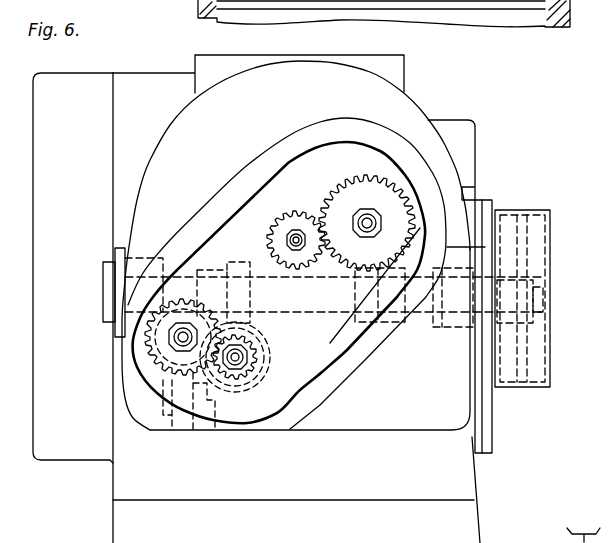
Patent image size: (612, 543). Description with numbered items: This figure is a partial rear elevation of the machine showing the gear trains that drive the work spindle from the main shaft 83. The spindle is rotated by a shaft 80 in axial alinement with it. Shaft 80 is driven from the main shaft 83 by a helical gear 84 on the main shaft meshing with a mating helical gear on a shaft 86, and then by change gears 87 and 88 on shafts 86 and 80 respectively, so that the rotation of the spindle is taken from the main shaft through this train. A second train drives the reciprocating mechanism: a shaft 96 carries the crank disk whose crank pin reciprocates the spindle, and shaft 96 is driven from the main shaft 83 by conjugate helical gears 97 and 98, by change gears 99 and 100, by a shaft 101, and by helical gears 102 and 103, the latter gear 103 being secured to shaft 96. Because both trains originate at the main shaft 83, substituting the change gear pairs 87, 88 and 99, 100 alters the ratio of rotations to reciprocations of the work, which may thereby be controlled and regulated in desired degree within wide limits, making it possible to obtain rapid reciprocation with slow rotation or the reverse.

The shaft 80 is at (296, 254).
The main shaft 83 is at (423, 309).
The helical gear 84 is at (368, 325).
The shaft 86 is at (359, 212).
The change gear 87 is at (326, 190).
The change gear 88 is at (276, 234).
The shaft 96 is at (203, 397).
The conjugate helical gear 97 is at (228, 259).
The conjugate helical gear 98 is at (268, 347).
The change gear 99 is at (250, 373).
The change gear 100 is at (146, 346).
The shaft 101 is at (180, 340).
The helical gear 102 is at (150, 363).
The helical gear 103 is at (173, 413).